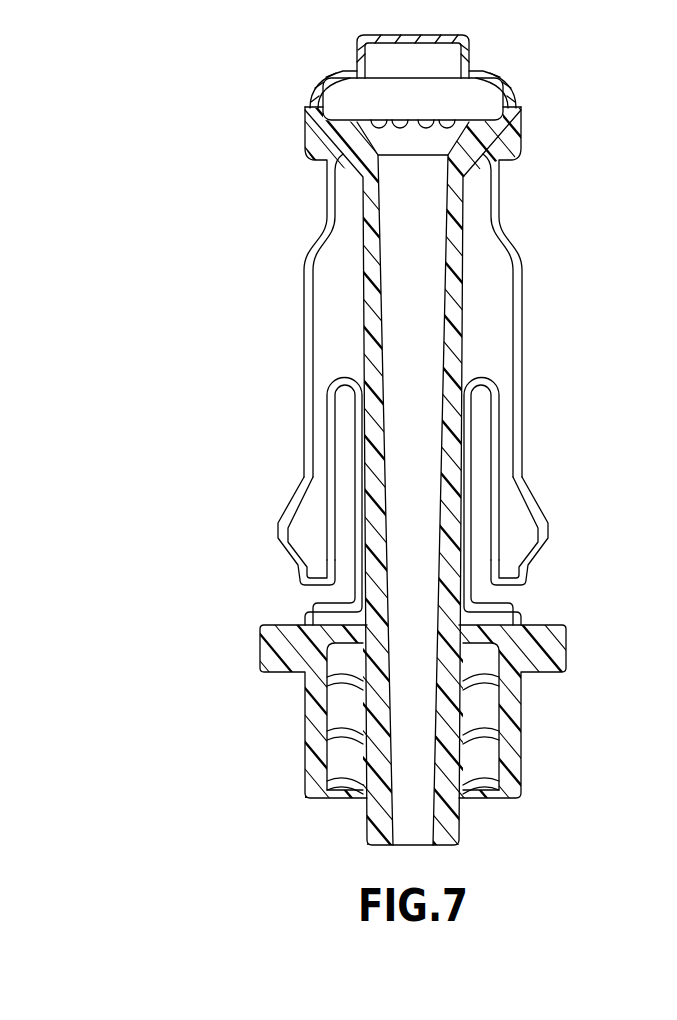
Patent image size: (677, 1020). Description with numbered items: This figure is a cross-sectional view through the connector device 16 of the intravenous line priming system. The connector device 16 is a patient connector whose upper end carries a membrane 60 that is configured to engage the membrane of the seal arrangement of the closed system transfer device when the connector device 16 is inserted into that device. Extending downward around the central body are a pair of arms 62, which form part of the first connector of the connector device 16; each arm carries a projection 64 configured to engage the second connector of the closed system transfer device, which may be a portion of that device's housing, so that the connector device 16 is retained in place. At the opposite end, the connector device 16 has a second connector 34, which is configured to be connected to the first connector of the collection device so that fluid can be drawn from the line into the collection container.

The connector device 16 is at (330, 279).
The membrane 60 is at (389, 37).
The arms 62 is at (323, 318).
The projections 64 is at (288, 532).
The second connector 34 is at (510, 727).